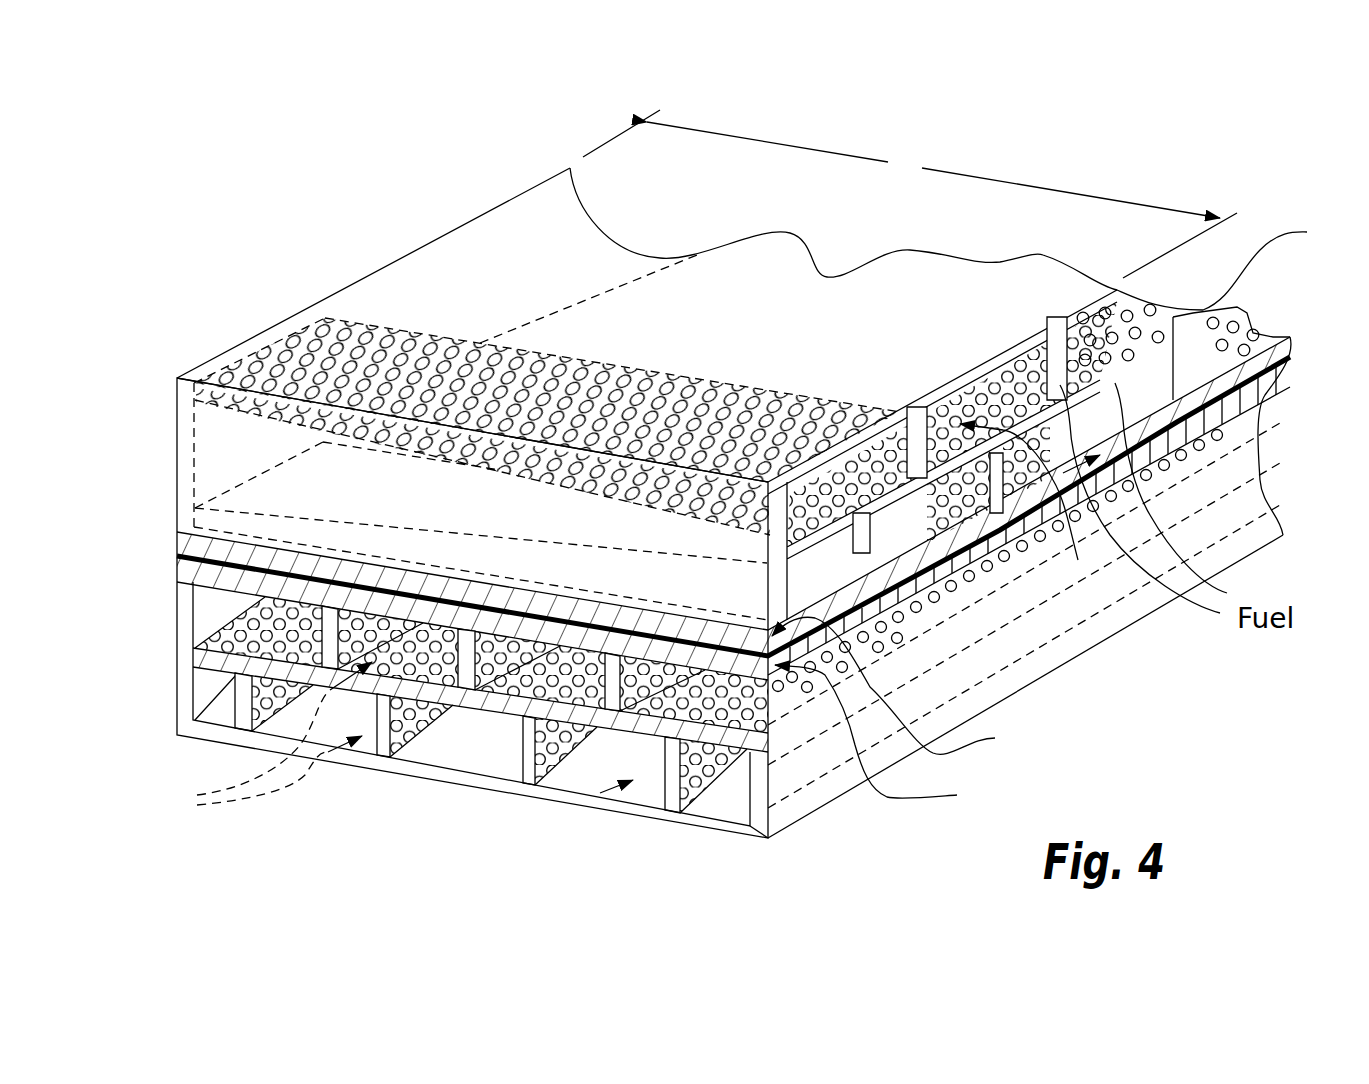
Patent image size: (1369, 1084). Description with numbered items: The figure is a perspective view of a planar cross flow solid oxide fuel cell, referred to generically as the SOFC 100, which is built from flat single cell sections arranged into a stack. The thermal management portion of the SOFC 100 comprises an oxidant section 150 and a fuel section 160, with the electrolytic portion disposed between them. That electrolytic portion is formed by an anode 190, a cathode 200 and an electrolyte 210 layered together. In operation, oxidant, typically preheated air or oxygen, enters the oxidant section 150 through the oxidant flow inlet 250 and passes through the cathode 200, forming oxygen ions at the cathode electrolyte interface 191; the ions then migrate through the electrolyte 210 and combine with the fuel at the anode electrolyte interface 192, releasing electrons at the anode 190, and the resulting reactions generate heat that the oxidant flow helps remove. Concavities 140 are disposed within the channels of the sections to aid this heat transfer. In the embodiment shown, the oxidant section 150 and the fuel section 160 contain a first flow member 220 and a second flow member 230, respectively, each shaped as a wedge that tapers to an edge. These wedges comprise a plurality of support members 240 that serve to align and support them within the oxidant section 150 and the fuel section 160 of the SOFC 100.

The SOFC 100 is at (330, 256).
The concavities 140 is at (370, 757).
The oxidant section 150 is at (792, 773).
The fuel section 160 is at (697, 334).
The anode 190 is at (177, 540).
The cathode electrolyte interface 191 is at (886, 737).
The anode electrolyte interface 192 is at (908, 685).
The cathode 200 is at (177, 577).
The electrolyte 210 is at (177, 558).
The first flow member 220 is at (193, 655).
The second flow member 230 is at (1307, 232).
The support members 240 is at (1060, 343).
The oxidant flow inlet 250 is at (597, 797).